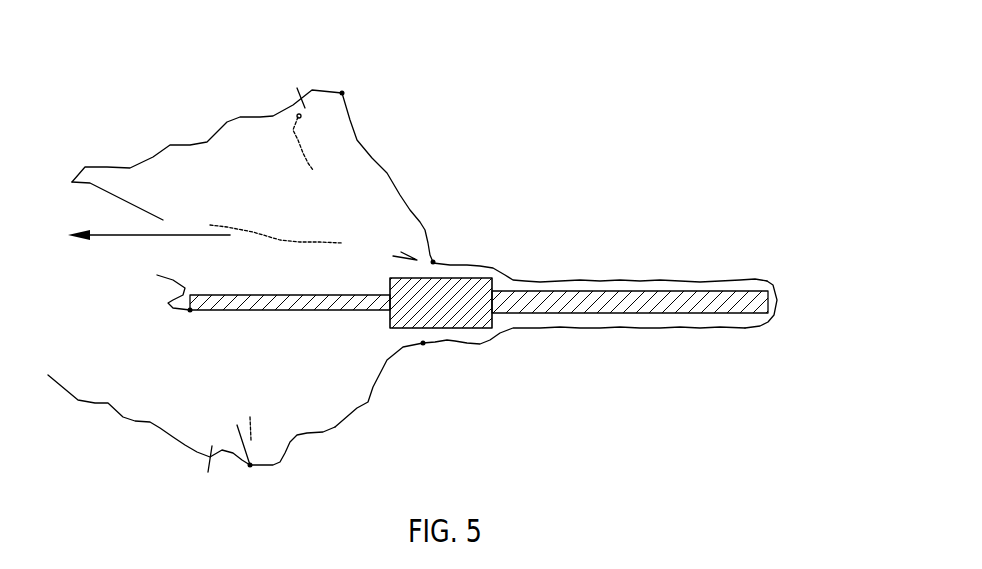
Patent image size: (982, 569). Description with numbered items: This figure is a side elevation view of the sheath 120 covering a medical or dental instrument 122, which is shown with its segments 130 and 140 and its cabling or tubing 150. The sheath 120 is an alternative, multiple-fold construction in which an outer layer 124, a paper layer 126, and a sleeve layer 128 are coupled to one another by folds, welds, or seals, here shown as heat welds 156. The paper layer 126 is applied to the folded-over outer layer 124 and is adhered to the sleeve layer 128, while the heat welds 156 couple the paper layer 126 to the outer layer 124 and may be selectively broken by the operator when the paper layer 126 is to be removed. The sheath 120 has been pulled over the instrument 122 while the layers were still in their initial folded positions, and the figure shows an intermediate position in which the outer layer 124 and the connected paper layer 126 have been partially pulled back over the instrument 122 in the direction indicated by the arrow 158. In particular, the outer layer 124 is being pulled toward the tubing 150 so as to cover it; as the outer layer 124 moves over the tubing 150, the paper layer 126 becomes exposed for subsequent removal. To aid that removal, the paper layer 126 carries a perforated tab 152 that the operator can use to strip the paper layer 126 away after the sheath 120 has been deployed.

The sheath 120 is at (626, 139).
The medical or dental instrument 122 is at (644, 332).
The outer layer 124 is at (388, 173).
The paper layer 126 is at (212, 140).
The sleeve layer 128 is at (588, 270).
The segment of the instrument 130 is at (727, 287).
The segment of the instrument 140 is at (478, 325).
The cabling or tubing 150 is at (319, 327).
The perforated tab 152 is at (312, 90).
The heat welds 156 is at (343, 92).
The arrow 158 is at (205, 207).